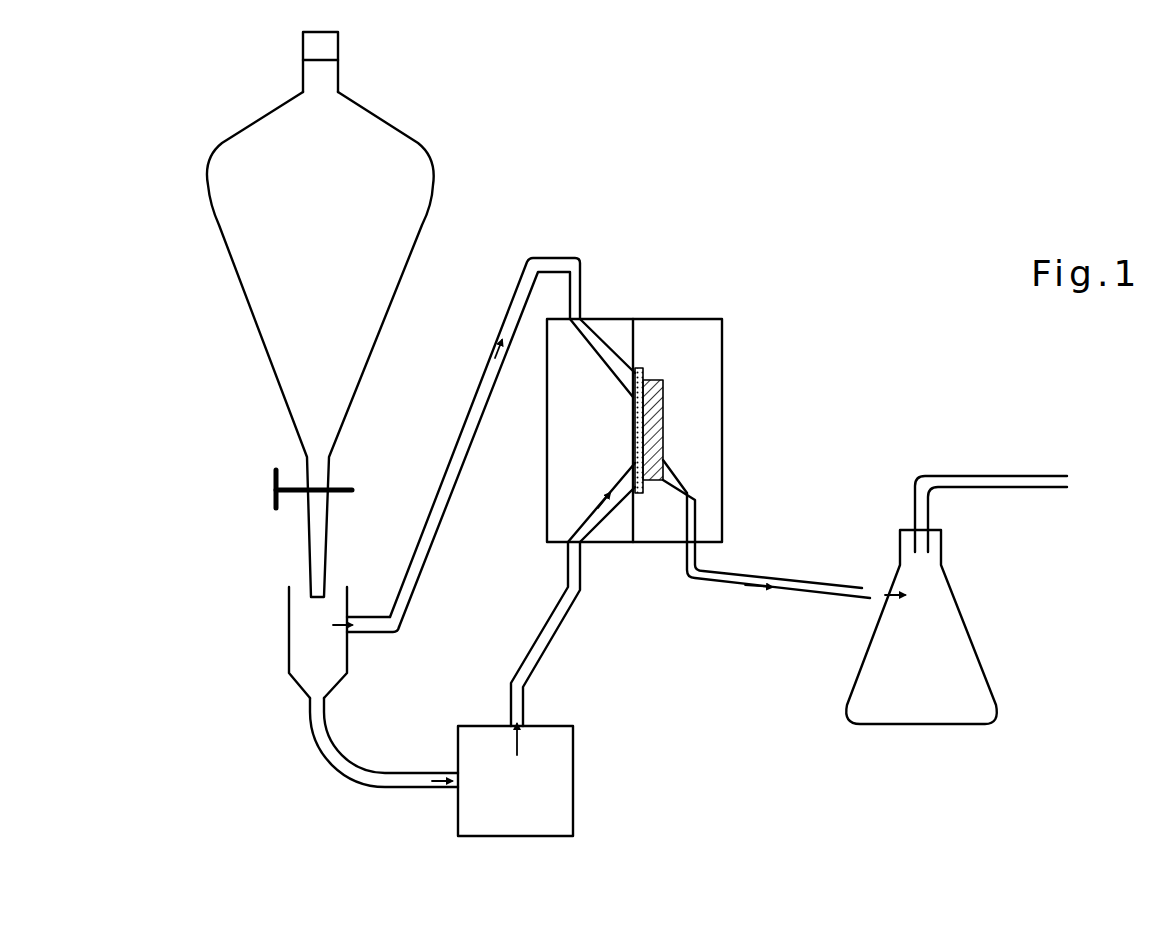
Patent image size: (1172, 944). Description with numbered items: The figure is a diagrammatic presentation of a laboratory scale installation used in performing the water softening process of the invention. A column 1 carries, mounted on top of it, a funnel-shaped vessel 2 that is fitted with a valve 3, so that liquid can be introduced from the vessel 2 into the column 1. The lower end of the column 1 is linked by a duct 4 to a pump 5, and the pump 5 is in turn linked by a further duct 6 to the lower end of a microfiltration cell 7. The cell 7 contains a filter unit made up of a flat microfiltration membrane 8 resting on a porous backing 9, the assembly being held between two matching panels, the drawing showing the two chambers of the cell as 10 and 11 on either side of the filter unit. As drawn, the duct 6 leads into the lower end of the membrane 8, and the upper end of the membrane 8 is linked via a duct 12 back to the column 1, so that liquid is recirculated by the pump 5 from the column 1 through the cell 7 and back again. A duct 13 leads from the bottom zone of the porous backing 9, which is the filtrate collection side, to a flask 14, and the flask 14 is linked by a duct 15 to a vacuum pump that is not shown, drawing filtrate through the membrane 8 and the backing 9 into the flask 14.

The column 1 is at (297, 637).
The funnel-shaped vessel 2 is at (253, 144).
The valve 3 is at (296, 487).
The duct 4 is at (349, 771).
The pump 5 is at (558, 791).
The further duct 6 is at (573, 570).
The microfiltration cell 7 is at (748, 339).
The flat microfiltration membrane 8 is at (638, 368).
The porous backing 9 is at (656, 378).
The first chamber 10 is at (562, 448).
The panel 11 is at (712, 452).
The duct 12 is at (545, 258).
The duct 13 is at (728, 575).
The flask 14 is at (921, 708).
The duct 15 is at (1032, 490).